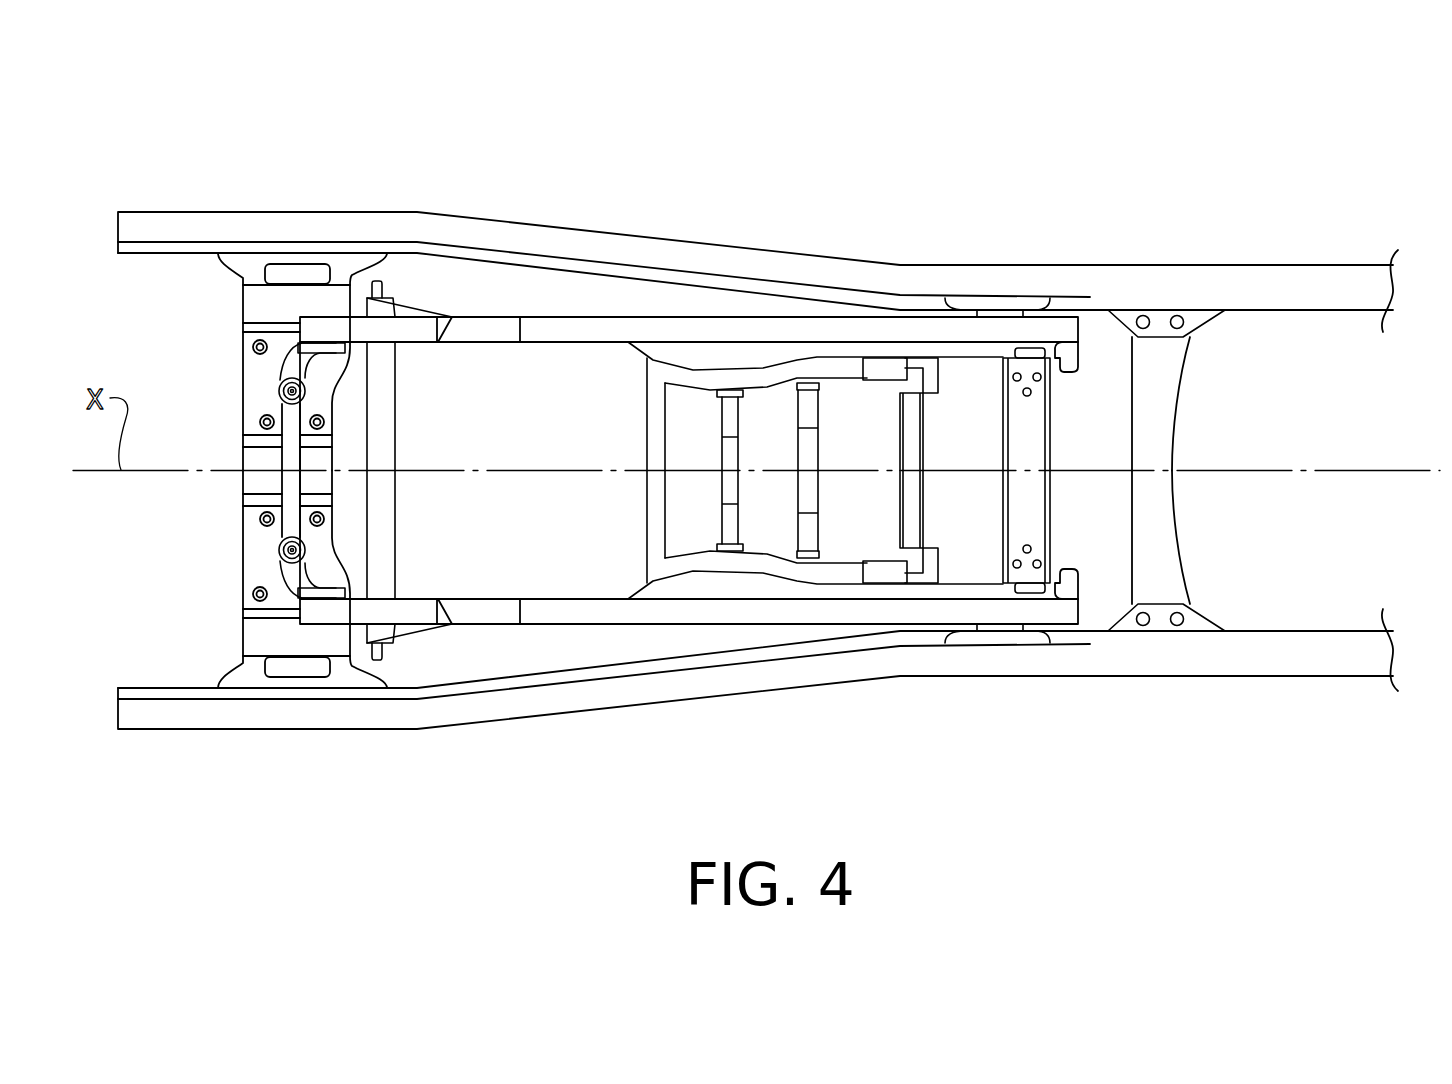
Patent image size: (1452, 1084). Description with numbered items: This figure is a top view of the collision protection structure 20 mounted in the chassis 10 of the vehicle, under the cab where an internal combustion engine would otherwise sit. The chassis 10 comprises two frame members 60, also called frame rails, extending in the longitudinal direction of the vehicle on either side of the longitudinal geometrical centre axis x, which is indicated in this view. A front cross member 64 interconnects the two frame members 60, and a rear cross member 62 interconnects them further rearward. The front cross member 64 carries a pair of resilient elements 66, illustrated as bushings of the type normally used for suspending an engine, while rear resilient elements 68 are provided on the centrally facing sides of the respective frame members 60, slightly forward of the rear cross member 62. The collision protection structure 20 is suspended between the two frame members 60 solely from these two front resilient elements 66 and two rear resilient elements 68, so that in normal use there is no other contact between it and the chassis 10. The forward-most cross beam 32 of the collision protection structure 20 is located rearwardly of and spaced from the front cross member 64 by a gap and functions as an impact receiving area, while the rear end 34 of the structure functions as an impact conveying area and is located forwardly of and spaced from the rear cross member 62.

The chassis 10 is at (210, 180).
The collision protection structure 20 is at (562, 642).
The forward-most cross beam 32 is at (385, 423).
The rear end 34 is at (1101, 322).
The frame members 60 is at (655, 258).
The rear cross member 62 is at (1150, 413).
The front cross member 64 is at (262, 405).
The resilient elements 66 is at (280, 385).
The resilient elements 68 is at (997, 303).